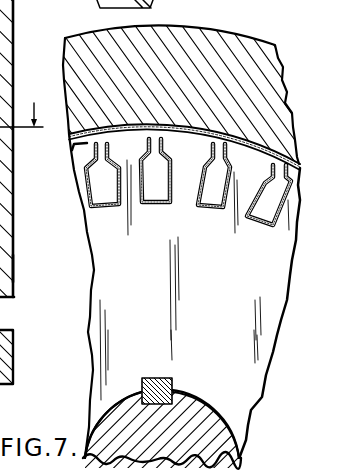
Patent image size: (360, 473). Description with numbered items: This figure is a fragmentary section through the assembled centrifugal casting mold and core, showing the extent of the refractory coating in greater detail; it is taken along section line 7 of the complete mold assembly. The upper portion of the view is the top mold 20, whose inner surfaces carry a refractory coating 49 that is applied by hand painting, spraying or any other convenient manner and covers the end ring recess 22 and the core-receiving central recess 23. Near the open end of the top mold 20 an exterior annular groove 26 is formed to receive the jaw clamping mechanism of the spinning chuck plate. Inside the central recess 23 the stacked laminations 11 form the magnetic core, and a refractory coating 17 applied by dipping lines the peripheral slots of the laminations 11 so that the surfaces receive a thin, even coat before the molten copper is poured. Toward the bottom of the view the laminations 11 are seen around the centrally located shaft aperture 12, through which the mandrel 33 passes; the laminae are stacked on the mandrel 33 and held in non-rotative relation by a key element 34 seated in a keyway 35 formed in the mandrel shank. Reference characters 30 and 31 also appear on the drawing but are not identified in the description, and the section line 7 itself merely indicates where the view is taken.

The section line 7- 7 is at (23, 111).
The laminations 11 is at (254, 285).
The shaft aperture 12 is at (117, 400).
The refractory coating 17 is at (193, 151).
The top mold 20 is at (243, 45).
The recess 22 is at (7, 53).
The central recess 23 is at (5, 206).
The exterior annular groove 26 is at (0, 325).
The housing bottom layer 30 is at (6, 284).
The housing inner layer 31 is at (0, 277).
The mandrel 33 is at (209, 422).
The key element 34 is at (171, 380).
The keyway 35 is at (173, 394).
The coating 49 is at (268, 143).